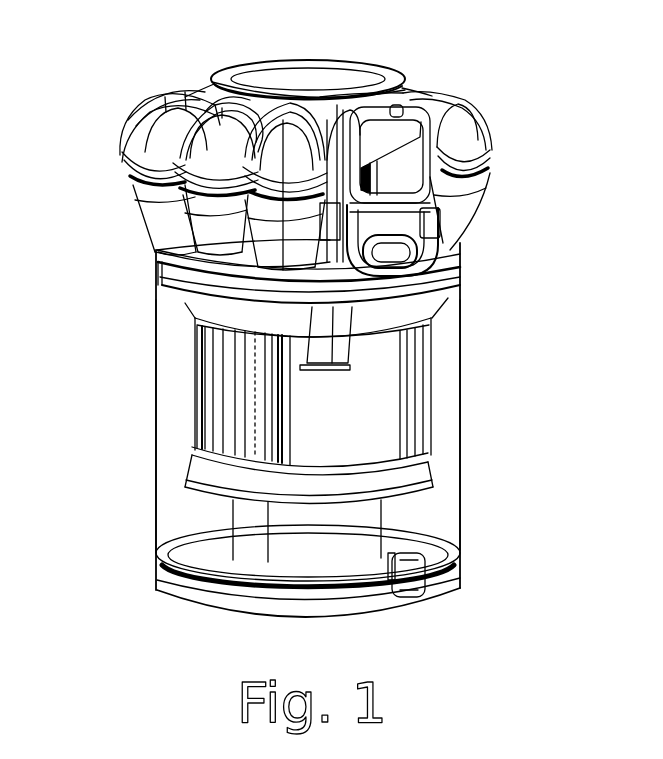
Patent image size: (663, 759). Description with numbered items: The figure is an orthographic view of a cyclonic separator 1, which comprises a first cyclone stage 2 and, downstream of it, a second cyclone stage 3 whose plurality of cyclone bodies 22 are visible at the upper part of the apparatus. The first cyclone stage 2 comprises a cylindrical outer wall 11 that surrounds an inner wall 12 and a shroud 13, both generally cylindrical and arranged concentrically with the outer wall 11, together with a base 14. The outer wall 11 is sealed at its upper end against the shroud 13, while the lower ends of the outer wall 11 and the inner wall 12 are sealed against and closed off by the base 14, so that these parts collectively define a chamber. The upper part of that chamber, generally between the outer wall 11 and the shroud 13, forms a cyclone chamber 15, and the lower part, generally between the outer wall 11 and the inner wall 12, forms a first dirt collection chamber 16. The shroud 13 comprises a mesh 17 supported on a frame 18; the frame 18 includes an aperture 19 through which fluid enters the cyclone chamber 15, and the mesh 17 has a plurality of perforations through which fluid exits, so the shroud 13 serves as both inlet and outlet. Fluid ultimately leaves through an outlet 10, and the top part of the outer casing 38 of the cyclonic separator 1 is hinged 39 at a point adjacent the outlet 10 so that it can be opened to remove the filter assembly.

The cyclonic separator 1 is at (98, 88).
The first cyclone stage 2 is at (152, 315).
The second cyclone stage 3 is at (130, 182).
The outlet 10 is at (440, 120).
The outer wall 11 is at (155, 450).
The inner wall 12 is at (155, 518).
The shroud 13 is at (192, 393).
The base 14 is at (375, 618).
The cyclone chamber 15 is at (440, 340).
The first dirt collection chamber 16 is at (440, 522).
The mesh 17 is at (430, 393).
The frame 18 is at (440, 468).
The aperture 19 is at (320, 370).
The cyclone bodies 22 is at (485, 205).
The outer casing 38 is at (337, 68).
The hinge 39 is at (408, 100).